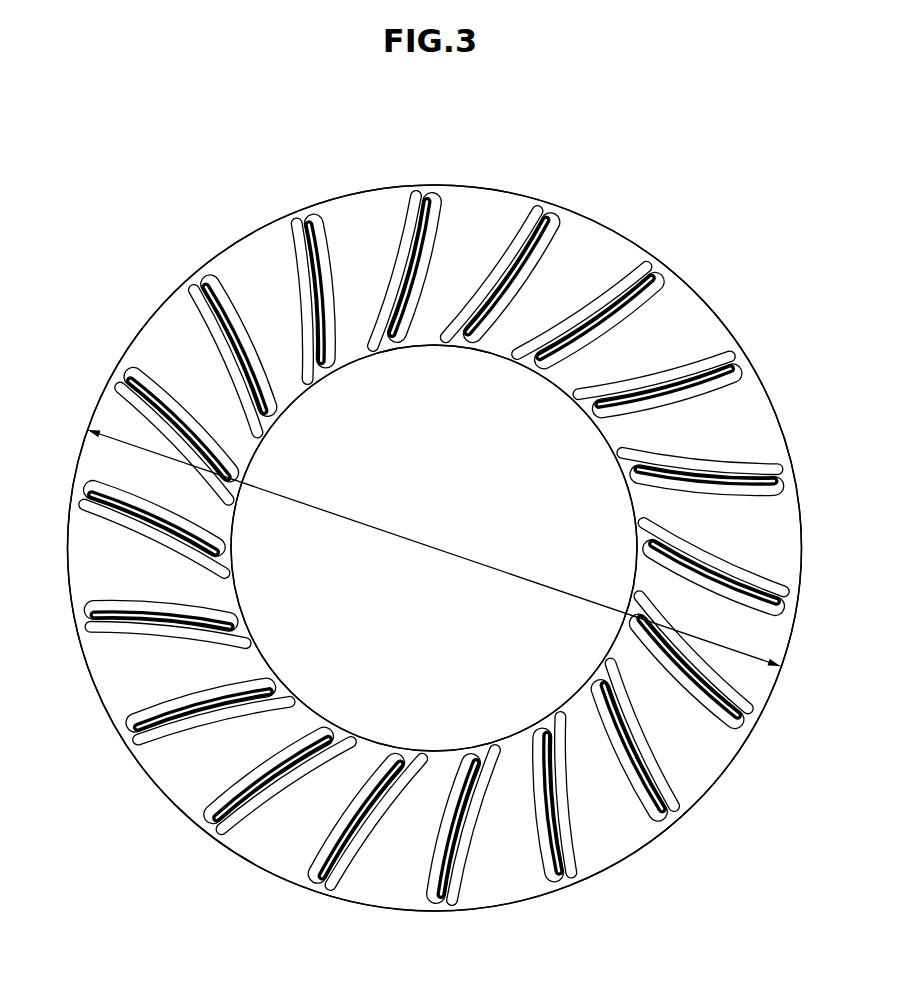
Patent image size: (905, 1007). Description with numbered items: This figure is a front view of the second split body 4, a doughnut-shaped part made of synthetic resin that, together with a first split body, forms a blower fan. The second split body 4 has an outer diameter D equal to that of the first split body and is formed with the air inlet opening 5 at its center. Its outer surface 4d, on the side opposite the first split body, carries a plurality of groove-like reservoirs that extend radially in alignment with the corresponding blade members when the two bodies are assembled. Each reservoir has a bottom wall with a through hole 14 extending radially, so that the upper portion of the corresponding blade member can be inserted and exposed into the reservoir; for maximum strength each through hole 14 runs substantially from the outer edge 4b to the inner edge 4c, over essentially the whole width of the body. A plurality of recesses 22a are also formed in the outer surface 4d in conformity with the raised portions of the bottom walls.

The second split body 4 is at (435, 531).
The outer edge 4b is at (633, 856).
The inner edge 4c is at (517, 735).
The outer surface 4d is at (270, 270).
The air inlet opening 5 is at (390, 619).
The through hole 14 is at (550, 824).
The recess 22a is at (606, 304).
The outer diameter D is at (444, 550).